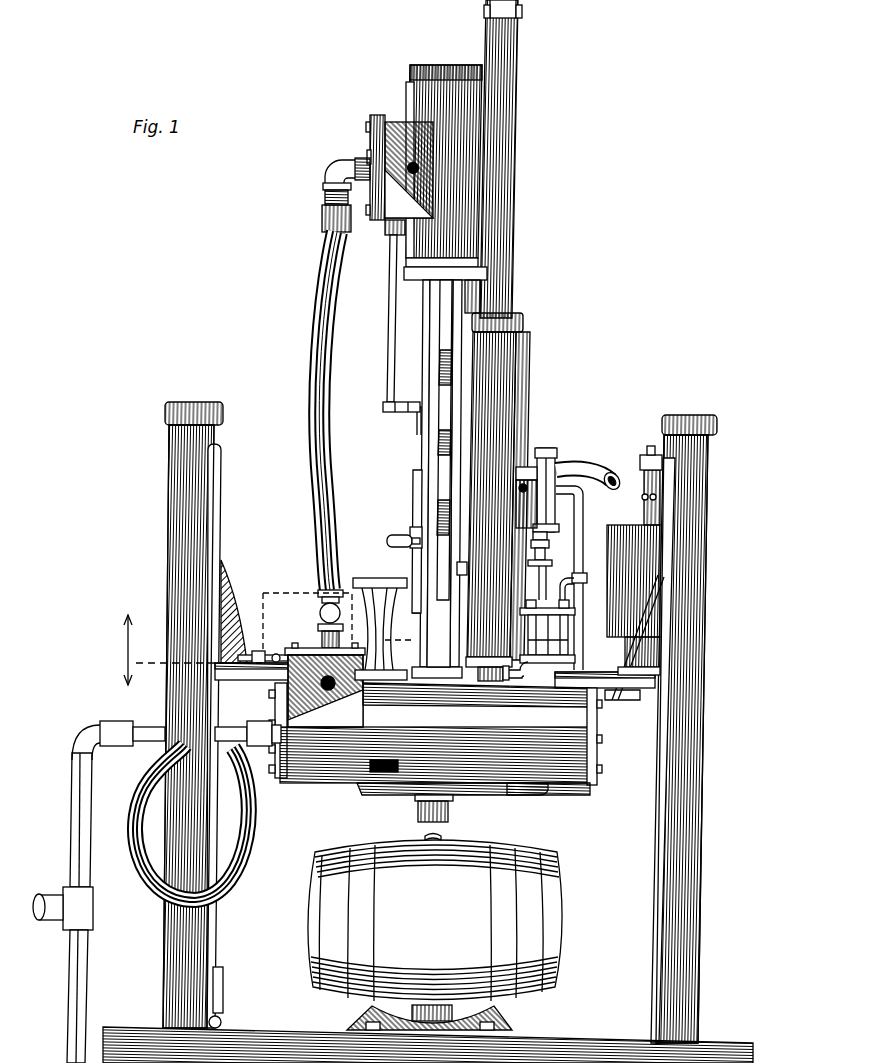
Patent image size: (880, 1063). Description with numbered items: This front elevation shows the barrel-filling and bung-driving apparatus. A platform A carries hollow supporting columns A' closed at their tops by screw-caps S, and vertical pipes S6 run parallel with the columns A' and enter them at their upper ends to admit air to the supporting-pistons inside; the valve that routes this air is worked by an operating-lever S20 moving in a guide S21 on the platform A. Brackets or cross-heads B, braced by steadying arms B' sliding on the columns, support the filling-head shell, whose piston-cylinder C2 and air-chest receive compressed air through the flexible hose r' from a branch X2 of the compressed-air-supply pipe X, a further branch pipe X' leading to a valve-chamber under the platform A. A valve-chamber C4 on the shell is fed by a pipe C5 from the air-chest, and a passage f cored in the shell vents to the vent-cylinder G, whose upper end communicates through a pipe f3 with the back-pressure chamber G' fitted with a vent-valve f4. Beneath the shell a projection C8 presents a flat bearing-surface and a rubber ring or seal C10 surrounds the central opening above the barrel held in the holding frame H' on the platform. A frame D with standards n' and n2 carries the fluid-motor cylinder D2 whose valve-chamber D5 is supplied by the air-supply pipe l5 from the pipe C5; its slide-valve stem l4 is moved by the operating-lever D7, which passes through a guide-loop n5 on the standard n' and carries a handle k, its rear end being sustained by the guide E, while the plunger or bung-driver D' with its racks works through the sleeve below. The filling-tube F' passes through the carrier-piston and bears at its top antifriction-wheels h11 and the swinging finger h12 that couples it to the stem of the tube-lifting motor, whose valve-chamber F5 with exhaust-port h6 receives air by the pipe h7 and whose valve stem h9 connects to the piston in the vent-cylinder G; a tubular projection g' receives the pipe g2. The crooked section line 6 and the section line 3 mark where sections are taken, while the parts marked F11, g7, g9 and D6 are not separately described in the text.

The screw-cap S is at (168, 411).
The vertical pipe S6 is at (222, 481).
The platform A is at (428, 749).
The hollow supporting column A' is at (162, 726).
The piston rod F11 is at (506, 124).
The horizontally-swinging finger h12 is at (516, 22).
The antifriction-wheel h11 is at (484, 12).
The filling-tube F' is at (509, 497).
The vertical cylinder D2 is at (428, 92).
The valve-chamber D5 is at (370, 135).
The piston-cylinder C2 is at (418, 168).
The air-supply pipe l5 is at (317, 373).
The pipe C5 is at (319, 613).
The bracing arm B' is at (442, 632).
The pipe g7 is at (270, 654).
The bracket B is at (435, 691).
The valve chest g9 is at (328, 690).
The section line 6 is at (183, 650).
The valve-chamber C4 is at (372, 722).
The rubber ring C10 is at (414, 798).
The plunger D' is at (449, 814).
The projection C8 is at (505, 795).
The sustaining-guide E is at (378, 618).
The guide-loop n5 is at (412, 567).
The frame D is at (417, 479).
The tube D6 is at (440, 456).
The standard n' is at (425, 440).
The standard n2 is at (473, 296).
The valve stem l4 is at (390, 343).
The section line 3 is at (384, 409).
The operating-lever D7 is at (410, 530).
The handle k is at (386, 543).
The tubular projection g' is at (550, 476).
The valve-chamber F5 is at (557, 466).
The exhaust-port h6 is at (529, 504).
The pipe g2 is at (611, 471).
The air-supply pipe h7 is at (583, 536).
The pipe f3 is at (578, 584).
The valve stem h9 is at (548, 566).
The vent-chamber G is at (559, 636).
The vent passage f is at (518, 678).
The back-pressure chamber G' is at (633, 600).
The vent-valve f4 is at (641, 497).
The branch pipe X2 is at (72, 808).
The compressed-air-supply pipe X is at (62, 897).
The branch pipe X' is at (89, 996).
The flexible hose r' is at (201, 822).
The guide S21 is at (223, 980).
The operating-lever S20 is at (221, 1017).
The barrel-holding frame H' is at (454, 1015).